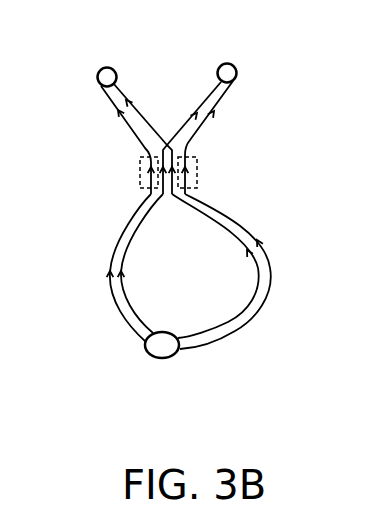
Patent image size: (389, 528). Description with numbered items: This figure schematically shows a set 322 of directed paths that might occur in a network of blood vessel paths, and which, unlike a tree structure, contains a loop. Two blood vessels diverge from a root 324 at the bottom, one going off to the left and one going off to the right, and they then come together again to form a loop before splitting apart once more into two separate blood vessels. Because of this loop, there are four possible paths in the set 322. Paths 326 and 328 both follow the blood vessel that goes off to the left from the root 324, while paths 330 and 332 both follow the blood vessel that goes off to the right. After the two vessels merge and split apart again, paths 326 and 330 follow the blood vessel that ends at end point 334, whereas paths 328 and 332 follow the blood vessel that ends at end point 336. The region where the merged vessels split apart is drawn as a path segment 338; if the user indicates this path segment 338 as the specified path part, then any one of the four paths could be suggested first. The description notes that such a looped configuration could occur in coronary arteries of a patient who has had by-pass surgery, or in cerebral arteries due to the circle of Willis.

The set of directed paths 322 is at (283, 87).
The root 324 is at (168, 357).
The path 326 is at (185, 264).
The path 328 is at (132, 239).
The path 330 is at (226, 216).
The path 332 is at (271, 274).
The end point 334 is at (99, 70).
The end point 336 is at (222, 66).
The path segment 338 is at (198, 166).